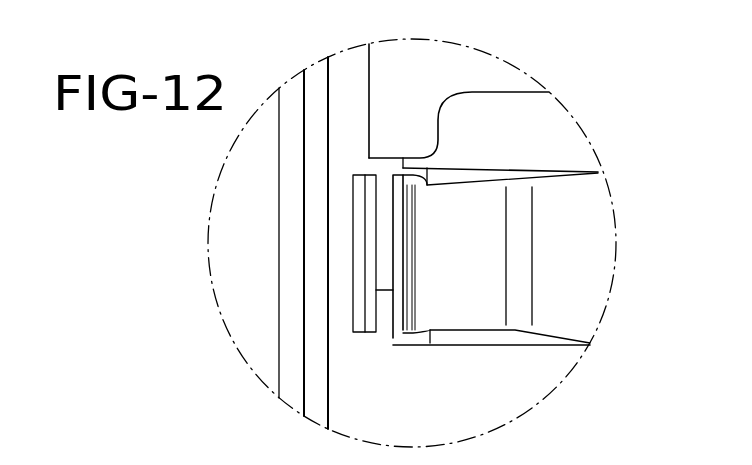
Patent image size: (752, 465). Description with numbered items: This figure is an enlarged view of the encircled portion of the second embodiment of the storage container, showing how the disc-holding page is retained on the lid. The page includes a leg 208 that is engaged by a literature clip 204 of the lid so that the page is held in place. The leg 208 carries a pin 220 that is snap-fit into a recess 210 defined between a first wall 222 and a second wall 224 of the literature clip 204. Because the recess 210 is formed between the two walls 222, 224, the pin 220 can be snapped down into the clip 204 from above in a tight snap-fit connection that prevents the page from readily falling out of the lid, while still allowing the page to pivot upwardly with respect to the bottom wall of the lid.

The literature clip 204 is at (576, 241).
The leg 208 is at (472, 73).
The recess 210 is at (385, 328).
The pin 220 is at (385, 227).
The first wall 222 is at (362, 307).
The second wall 224 is at (410, 283).